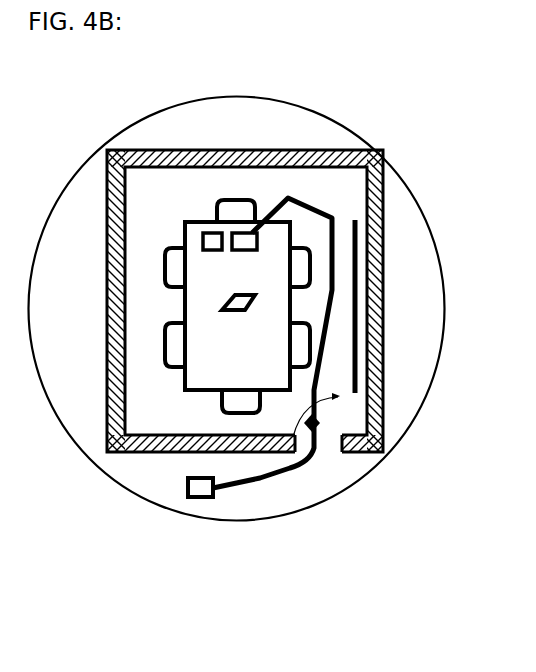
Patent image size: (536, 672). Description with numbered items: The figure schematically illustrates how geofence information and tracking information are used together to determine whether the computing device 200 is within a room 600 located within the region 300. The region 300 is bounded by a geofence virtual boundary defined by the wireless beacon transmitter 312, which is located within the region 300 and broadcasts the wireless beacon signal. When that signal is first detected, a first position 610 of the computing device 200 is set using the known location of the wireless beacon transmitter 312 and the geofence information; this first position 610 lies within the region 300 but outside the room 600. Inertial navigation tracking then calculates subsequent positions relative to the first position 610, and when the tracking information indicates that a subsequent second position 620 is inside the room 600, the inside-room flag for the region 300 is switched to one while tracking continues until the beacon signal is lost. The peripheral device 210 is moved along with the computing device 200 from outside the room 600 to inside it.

The computing device 200 is at (247, 242).
The peripheral device 210 is at (212, 242).
The region 300 is at (343, 128).
The wireless beacon transmitter 312 is at (222, 312).
The room 600 is at (143, 303).
The first position 610 is at (220, 486).
The second position 620 is at (320, 428).